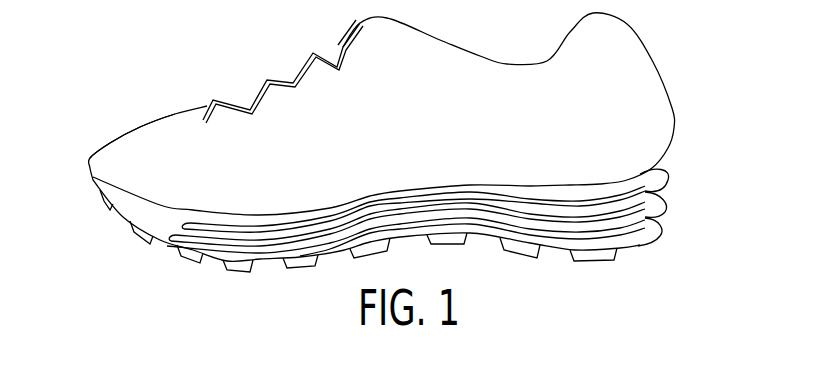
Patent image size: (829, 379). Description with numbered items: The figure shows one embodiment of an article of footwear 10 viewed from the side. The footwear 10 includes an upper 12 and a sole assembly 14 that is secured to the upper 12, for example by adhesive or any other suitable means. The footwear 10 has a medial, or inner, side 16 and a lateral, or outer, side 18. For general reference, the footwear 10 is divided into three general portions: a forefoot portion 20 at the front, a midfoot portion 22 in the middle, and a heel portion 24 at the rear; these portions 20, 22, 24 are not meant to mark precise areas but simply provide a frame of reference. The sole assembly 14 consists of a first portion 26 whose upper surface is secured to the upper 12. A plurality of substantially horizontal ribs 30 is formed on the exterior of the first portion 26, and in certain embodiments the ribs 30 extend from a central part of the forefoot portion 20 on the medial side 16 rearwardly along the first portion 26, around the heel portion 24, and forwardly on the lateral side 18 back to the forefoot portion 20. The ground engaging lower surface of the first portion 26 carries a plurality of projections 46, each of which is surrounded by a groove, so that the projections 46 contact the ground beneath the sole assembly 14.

The article of footwear 10 is at (398, 149).
The upper 12 is at (480, 77).
The sole assembly 14 is at (378, 210).
The medial side 16 is at (333, 70).
The lateral side 18 is at (133, 123).
The forefoot portion 20 is at (188, 173).
The midfoot portion 22 is at (420, 139).
The heel portion 24 is at (612, 131).
The first portion 26 is at (540, 188).
The substantially horizontal ribs 30 is at (664, 212).
The projections 46 is at (617, 258).